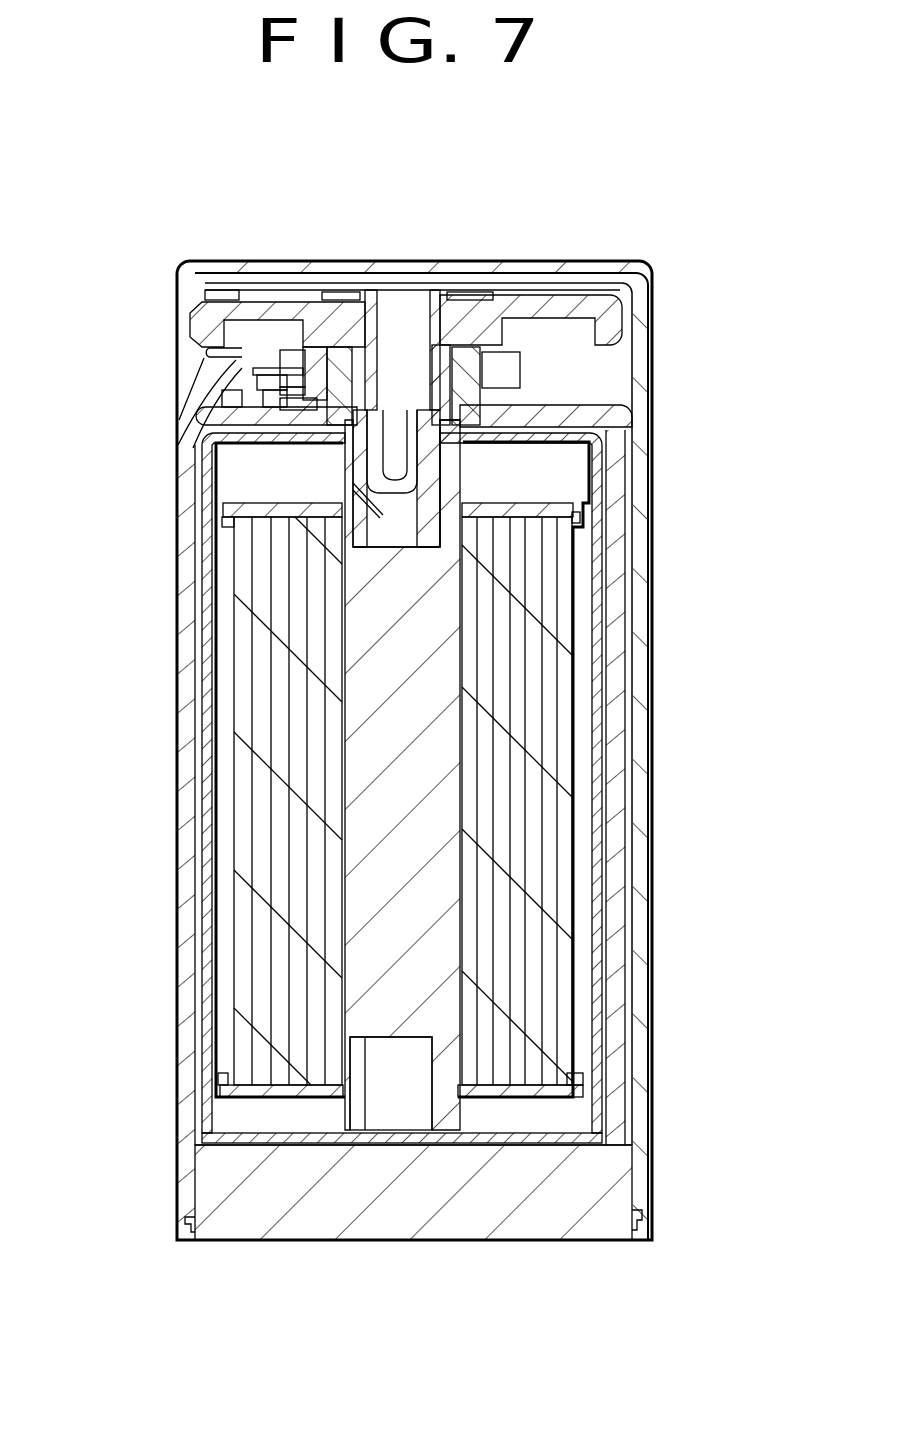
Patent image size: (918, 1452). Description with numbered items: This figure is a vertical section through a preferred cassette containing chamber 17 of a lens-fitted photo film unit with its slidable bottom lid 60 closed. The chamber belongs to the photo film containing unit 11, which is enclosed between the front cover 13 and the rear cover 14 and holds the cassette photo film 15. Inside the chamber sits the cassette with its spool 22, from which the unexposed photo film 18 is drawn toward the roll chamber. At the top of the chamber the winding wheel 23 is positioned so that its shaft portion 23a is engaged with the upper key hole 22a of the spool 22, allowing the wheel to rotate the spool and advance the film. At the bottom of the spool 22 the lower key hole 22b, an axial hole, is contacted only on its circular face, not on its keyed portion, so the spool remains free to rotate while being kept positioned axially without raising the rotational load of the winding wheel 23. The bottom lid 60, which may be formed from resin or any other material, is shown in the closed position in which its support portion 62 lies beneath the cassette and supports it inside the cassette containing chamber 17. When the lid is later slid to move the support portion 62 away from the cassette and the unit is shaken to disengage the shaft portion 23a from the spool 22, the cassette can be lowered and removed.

The photo film containing unit 11 is at (550, 373).
The front cover 13 is at (642, 395).
The rear cover 14 is at (176, 684).
The cassette photo film 15 is at (205, 808).
The cassette containing chamber 17 is at (600, 660).
The unexposed photo film 18 is at (245, 565).
The spool 22 is at (422, 712).
The upper key hole 22a is at (432, 545).
The lower key hole 22b is at (420, 1058).
The winding wheel 23 is at (542, 290).
The shaft portion 23a is at (395, 507).
The bottom lid 60 is at (350, 1215).
The support portion 62 is at (447, 1217).